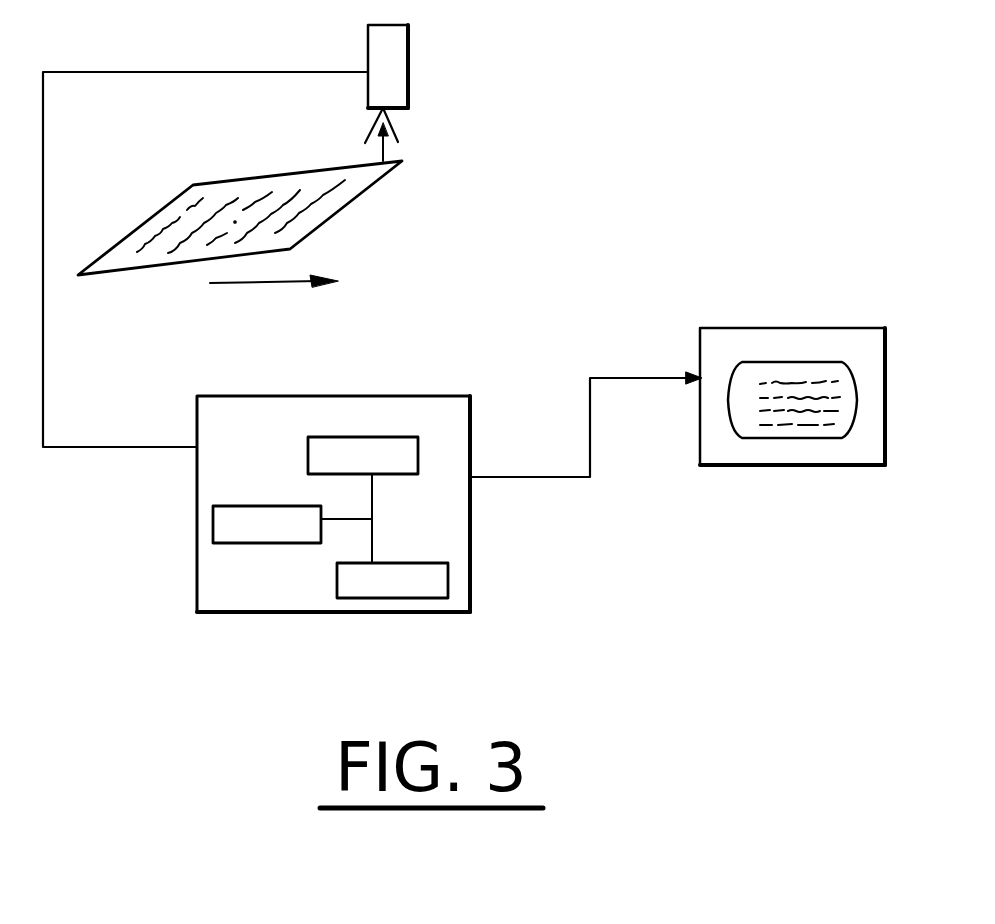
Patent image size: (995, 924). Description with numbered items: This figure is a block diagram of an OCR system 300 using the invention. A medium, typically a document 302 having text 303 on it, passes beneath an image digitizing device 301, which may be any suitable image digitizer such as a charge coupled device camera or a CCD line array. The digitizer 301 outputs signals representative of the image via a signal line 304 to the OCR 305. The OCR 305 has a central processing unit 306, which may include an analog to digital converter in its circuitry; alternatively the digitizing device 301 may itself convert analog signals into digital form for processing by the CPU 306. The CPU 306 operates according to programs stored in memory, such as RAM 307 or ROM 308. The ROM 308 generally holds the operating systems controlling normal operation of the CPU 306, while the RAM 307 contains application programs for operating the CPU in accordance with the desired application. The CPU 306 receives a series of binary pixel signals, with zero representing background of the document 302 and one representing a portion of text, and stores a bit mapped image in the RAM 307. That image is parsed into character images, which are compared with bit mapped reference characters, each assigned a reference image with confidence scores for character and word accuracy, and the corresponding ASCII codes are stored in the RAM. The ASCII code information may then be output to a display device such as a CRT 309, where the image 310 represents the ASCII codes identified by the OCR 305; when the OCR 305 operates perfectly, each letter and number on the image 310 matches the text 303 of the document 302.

The OCR system 300 is at (730, 632).
The image digitizing device 301 is at (435, 87).
The document 302 is at (157, 266).
The text 303 is at (194, 200).
The signal line 304 is at (70, 449).
The OCR 305 is at (325, 636).
The central processing unit 306 is at (275, 506).
The RAM 307 is at (418, 465).
The ROM 308 is at (337, 581).
The CRT 309 is at (722, 475).
The image 310 is at (802, 439).